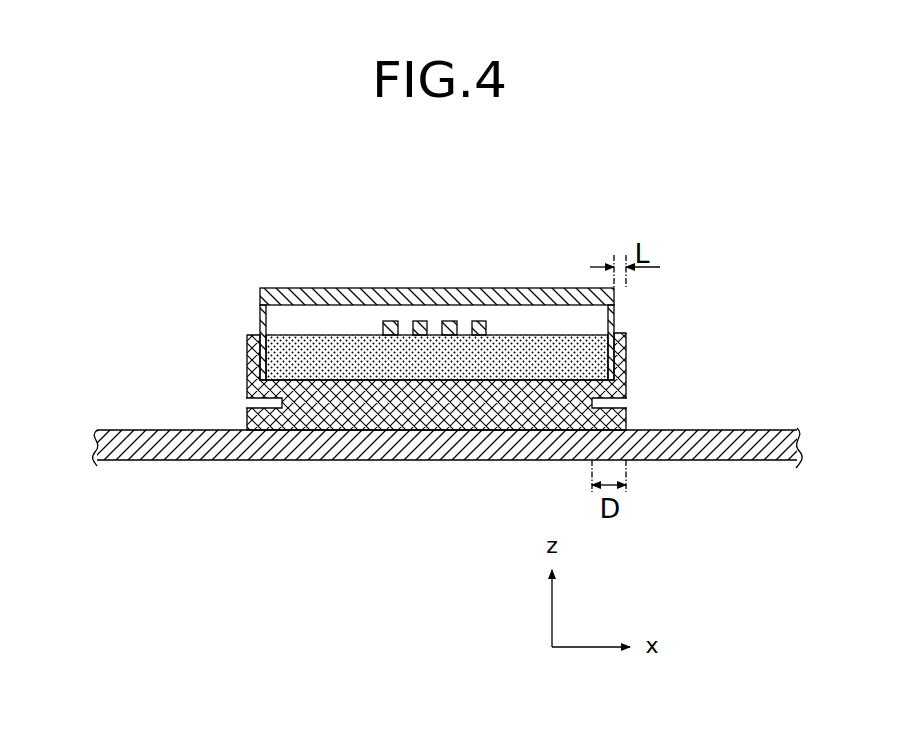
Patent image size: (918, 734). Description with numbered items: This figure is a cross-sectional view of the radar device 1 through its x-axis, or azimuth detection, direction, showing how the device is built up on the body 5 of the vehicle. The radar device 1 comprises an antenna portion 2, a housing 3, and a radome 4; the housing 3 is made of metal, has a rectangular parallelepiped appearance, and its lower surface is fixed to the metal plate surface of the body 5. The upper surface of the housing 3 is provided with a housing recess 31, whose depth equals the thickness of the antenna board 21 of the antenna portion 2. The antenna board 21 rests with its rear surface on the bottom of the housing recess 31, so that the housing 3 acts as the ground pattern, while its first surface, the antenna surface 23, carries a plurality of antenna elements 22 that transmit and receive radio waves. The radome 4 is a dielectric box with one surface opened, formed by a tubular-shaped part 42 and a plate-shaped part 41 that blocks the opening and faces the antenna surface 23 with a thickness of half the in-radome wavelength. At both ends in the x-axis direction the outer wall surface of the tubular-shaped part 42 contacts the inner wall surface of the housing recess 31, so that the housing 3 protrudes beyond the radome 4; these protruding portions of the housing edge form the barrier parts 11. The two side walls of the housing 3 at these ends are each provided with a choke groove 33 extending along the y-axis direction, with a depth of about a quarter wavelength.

The radar device 1 is at (558, 193).
The antenna portion 2 is at (540, 325).
The housing 3 is at (418, 403).
The radome 4 is at (435, 297).
The body 5 is at (195, 448).
The barrier part 11 is at (250, 333).
The antenna board 21 is at (345, 350).
The antenna elements 22 is at (418, 325).
The antenna surface 23 is at (302, 320).
The housing recess 31 is at (485, 362).
The choke groove 33 is at (248, 402).
The plate-shaped part 41 is at (485, 293).
The tubular-shaped part 42 is at (262, 313).